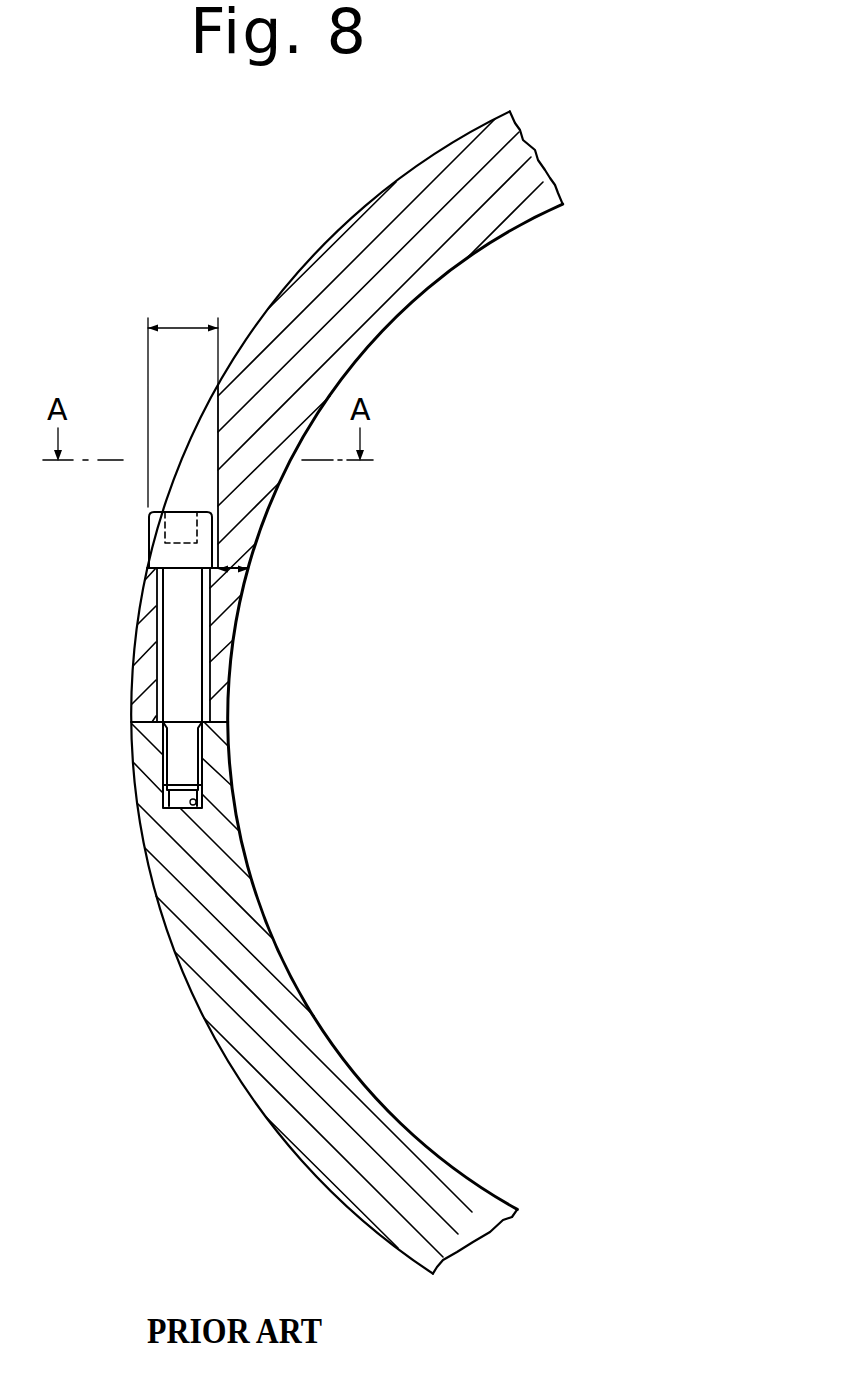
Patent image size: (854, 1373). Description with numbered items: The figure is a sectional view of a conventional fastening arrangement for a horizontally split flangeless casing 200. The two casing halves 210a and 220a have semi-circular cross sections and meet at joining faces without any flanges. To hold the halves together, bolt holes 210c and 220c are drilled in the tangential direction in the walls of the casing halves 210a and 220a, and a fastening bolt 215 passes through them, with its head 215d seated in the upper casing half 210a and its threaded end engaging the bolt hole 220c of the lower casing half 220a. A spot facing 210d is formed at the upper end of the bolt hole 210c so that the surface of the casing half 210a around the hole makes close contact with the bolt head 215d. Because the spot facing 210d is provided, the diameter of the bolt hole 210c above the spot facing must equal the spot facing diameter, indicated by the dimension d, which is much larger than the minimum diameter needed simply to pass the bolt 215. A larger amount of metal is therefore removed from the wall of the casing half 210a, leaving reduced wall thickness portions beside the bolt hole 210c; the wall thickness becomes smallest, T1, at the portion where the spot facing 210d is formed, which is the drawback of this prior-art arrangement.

The flangeless casing 200 is at (275, 250).
The casing half 210a is at (387, 293).
The bolt hole 210c is at (215, 669).
The spot facing 210d is at (162, 567).
The fastening bolt 215 is at (190, 697).
The bolt head 215d is at (203, 553).
The casing half 220a is at (300, 1027).
The bolt hole 220c is at (190, 810).
The smallest wall thickness T1 is at (233, 580).
The counterbore diameter d is at (183, 394).